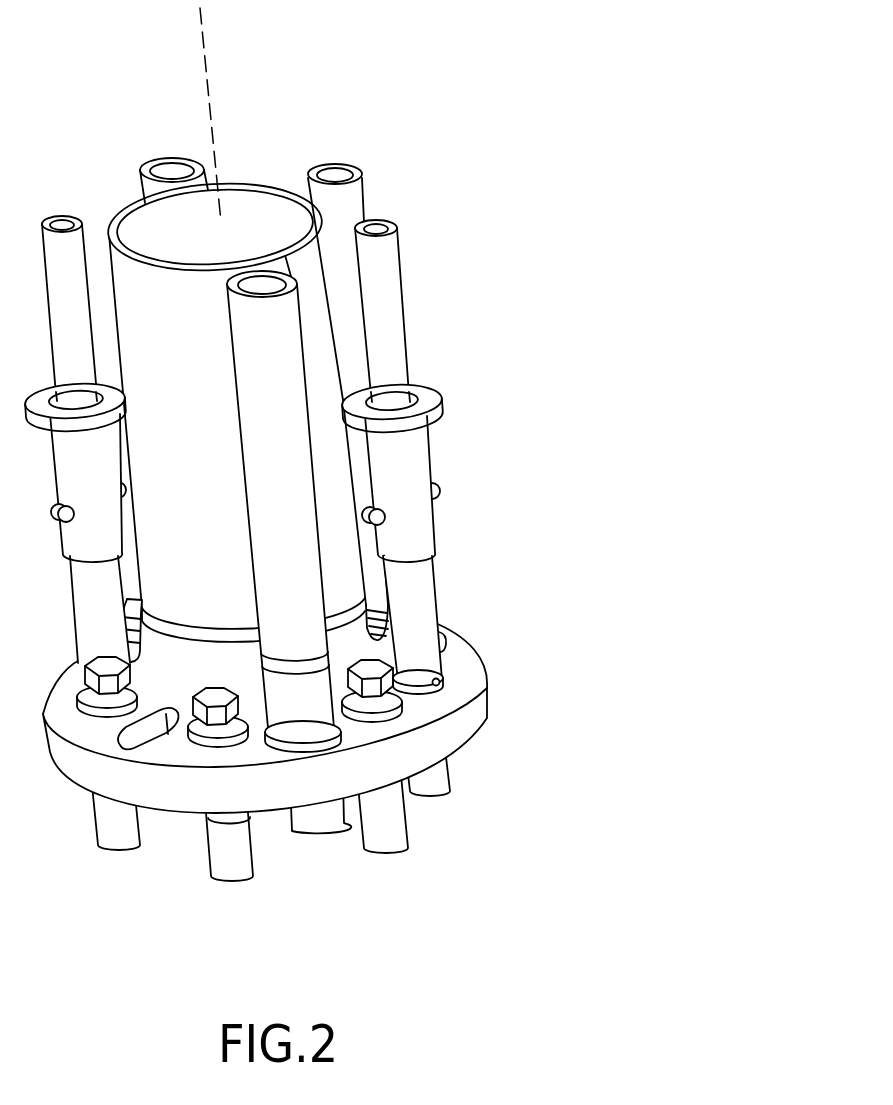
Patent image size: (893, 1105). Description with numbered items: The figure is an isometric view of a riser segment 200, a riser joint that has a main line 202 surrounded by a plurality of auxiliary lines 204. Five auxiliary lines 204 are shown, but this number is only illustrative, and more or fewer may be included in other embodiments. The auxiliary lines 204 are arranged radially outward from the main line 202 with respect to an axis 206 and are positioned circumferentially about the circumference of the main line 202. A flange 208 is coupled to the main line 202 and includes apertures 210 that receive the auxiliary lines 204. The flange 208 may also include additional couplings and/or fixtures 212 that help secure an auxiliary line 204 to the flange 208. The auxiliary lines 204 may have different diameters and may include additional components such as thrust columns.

The riser segment 200 is at (308, 447).
The main line 202 is at (245, 186).
The auxiliary lines 204 is at (350, 188).
The axis 206 is at (208, 100).
The flange 208 is at (478, 697).
The apertures 210 is at (437, 695).
The couplings and/or fixtures 212 is at (440, 682).